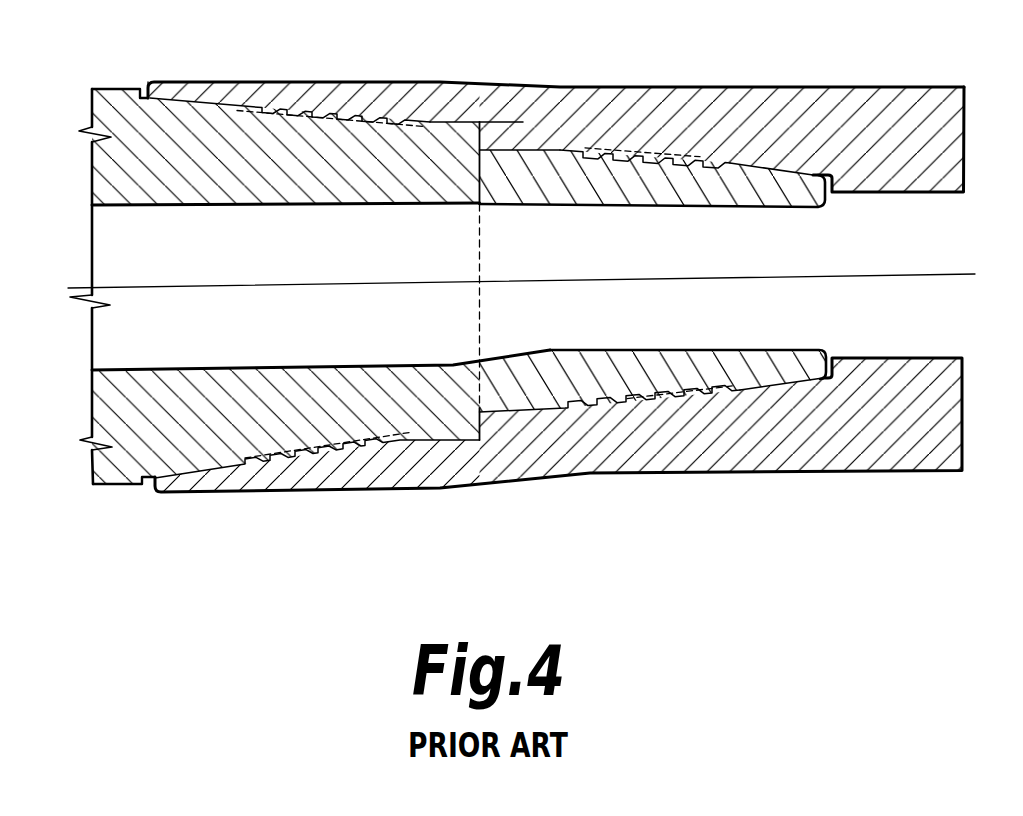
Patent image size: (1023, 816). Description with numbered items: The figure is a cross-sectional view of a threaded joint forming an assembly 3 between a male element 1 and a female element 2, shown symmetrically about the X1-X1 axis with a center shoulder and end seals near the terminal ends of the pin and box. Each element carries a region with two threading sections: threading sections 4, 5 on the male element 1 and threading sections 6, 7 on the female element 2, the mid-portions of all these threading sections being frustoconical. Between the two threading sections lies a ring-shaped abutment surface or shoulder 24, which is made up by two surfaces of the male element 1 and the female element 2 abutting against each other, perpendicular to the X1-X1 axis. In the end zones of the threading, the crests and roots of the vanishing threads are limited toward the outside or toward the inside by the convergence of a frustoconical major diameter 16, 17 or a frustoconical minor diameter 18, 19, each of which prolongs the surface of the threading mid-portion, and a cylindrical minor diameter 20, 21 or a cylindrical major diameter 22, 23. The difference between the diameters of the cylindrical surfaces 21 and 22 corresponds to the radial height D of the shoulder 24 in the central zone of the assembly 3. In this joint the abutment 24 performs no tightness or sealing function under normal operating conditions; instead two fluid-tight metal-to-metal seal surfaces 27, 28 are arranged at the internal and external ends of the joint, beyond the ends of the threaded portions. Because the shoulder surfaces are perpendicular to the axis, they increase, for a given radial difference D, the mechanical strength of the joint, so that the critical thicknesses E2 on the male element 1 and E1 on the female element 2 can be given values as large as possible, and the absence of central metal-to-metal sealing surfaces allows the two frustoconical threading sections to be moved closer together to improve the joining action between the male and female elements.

The male element 1 is at (337, 437).
The female element 2 is at (788, 456).
The assembly 3 is at (503, 508).
The threading section 4 is at (674, 179).
The threading section 5 is at (321, 125).
The threading section 6 is at (659, 152).
The threading section 7 is at (329, 93).
The frustoconical major diameter 16 is at (695, 157).
The frustoconical major diameter 17 is at (374, 119).
The frustoconical minor diameter 18 is at (632, 158).
The frustoconical minor diameter 19 is at (282, 114).
The cylindrical minor diameter 20 is at (708, 167).
The cylindrical minor diameter 21 is at (412, 124).
The cylindrical major diameter 22 is at (592, 150).
The cylindrical major diameter 23 is at (268, 105).
The ring-shaped abutment surface or shoulder 24 is at (471, 140).
The metal-to-metal seal surface 27 is at (793, 172).
The metal-to-metal seal surface 28 is at (169, 97).
The radial height D is at (522, 102).
The critical thickness E1 is at (470, 444).
The critical thickness E2 is at (485, 151).
The axis X1 is at (521, 280).